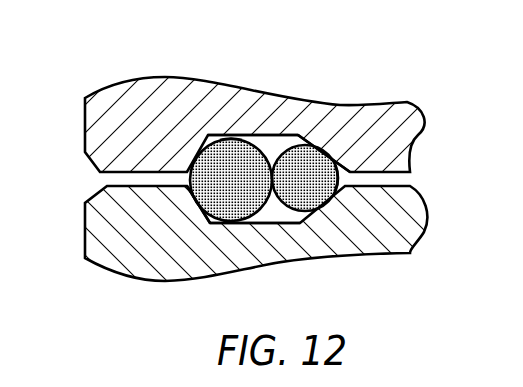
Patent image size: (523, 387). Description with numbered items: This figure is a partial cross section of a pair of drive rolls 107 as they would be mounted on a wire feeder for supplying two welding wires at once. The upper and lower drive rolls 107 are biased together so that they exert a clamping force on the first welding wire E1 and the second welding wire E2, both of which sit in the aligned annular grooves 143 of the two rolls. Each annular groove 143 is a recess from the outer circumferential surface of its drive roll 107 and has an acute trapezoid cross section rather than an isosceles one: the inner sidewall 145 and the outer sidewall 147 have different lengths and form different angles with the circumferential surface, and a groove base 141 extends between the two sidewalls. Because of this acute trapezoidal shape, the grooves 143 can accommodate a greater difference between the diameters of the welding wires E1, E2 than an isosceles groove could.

The drive roll 107 is at (85, 137).
The groove base 141 is at (288, 134).
The annular groove 143 is at (328, 118).
The inner sidewall 145 is at (328, 170).
The outer sidewall 147 is at (195, 155).
The first welding wire E1 is at (333, 170).
The second welding wire E2 is at (230, 143).